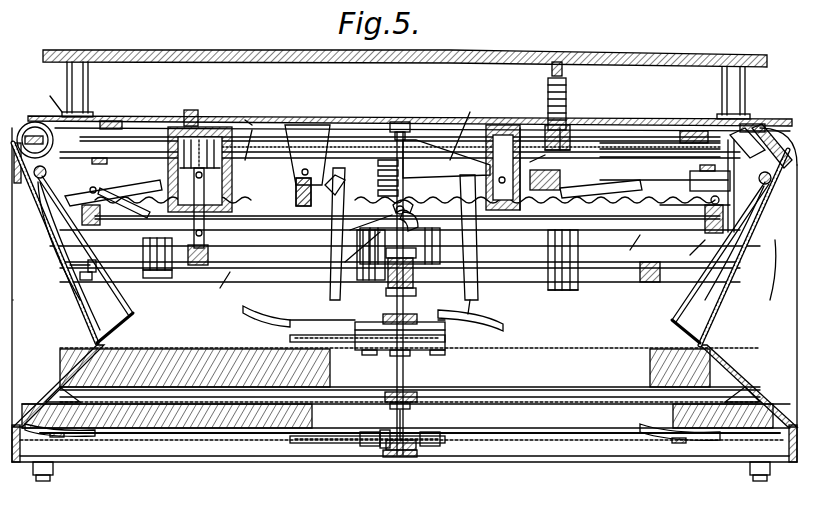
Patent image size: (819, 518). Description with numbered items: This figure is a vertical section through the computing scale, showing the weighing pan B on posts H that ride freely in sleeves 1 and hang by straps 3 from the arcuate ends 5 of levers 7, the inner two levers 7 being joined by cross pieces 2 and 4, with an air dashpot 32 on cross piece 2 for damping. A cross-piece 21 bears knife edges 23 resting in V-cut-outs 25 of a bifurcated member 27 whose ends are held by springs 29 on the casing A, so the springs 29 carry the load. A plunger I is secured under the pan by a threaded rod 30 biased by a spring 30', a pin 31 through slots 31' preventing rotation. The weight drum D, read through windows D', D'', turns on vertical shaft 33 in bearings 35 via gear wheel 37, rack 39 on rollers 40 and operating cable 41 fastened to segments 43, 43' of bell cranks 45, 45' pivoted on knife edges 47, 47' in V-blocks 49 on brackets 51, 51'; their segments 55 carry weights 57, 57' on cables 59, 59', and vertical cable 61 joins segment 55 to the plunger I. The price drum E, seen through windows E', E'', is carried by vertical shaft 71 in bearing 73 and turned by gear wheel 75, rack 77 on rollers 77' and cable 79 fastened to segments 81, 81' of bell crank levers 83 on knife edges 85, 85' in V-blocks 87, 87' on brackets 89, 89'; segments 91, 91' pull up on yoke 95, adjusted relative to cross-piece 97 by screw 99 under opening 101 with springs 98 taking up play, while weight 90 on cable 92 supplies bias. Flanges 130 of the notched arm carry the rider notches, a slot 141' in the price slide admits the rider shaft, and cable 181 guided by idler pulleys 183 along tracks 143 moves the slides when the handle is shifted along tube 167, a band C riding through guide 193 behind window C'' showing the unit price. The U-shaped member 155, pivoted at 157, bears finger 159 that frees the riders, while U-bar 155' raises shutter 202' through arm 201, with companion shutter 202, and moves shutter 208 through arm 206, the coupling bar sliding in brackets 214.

The weighing pan B is at (676, 53).
The posts H is at (88, 79).
The sleeves 1 is at (92, 116).
The price drum E is at (406, 378).
The window E'' is at (58, 376).
The window E' is at (748, 383).
The left slide D'' is at (54, 383).
The right slide D' is at (755, 384).
The weight drum D is at (410, 464).
The vertical shaft 71 is at (24, 123).
The idler pulleys 183 is at (36, 124).
The tube 167 is at (56, 112).
The pivot 157 is at (58, 250).
The U-shaped member 155 is at (56, 256).
The U-bar 155' is at (747, 243).
The link rod 141' is at (106, 241).
The link 202 is at (131, 328).
The shutter 202' is at (703, 261).
The bracket 214 is at (20, 260).
The straps 3 is at (385, 253).
The arcuate ends 5 is at (88, 265).
The block 201 is at (120, 290).
The guide 193 is at (782, 265).
The depending flanges 130 is at (240, 188).
The air dashpot 32 is at (215, 200).
The cross piece 2 is at (209, 257).
The tracks 143 is at (290, 124).
The continuous cable 181 is at (262, 120).
The casing A is at (256, 116).
The bell crank 45' is at (101, 294).
The knife edge 47' is at (117, 173).
The segment 55 is at (165, 192).
The bracket 51' is at (120, 197).
The cable 59' is at (145, 246).
The cable 59 is at (543, 258).
The weight 57 is at (563, 303).
The weight 57' is at (173, 288).
The levers 7 is at (432, 269).
The screw 99 is at (396, 122).
The opening 101 is at (404, 122).
The bracket 89' is at (364, 144).
The segment 91 is at (446, 137).
The springs 29 is at (465, 128).
The bracket 89 is at (500, 151).
The slots 31' is at (526, 151).
The knife edge 85' is at (314, 229).
The segment 91' is at (348, 176).
The V-block 87' is at (306, 212).
The V-block 87 is at (482, 237).
The knife edge 85 is at (533, 175).
The vertical cable 61 is at (544, 155).
The yoke 95 is at (396, 206).
The springs 98 is at (418, 212).
The cable 92 is at (380, 225).
The cross-piece 97 is at (350, 252).
The V-cut-outs 25 is at (426, 243).
The weight 90 is at (378, 280).
The cross-piece 21 is at (400, 289).
The knife edges 23 is at (415, 262).
The bifurcated member 27 is at (420, 290).
The bearing 73 is at (412, 316).
The cable 79 is at (320, 332).
The rack 77 is at (367, 323).
The rollers 77' is at (408, 362).
The gear wheel 75 is at (395, 356).
The bearings 35 is at (410, 395).
The vertical shaft 33 is at (408, 417).
The rack 39 is at (318, 443).
The rollers 40 is at (362, 446).
The gear wheel 37 is at (383, 450).
The operating cable 41 is at (268, 445).
The segment 43 is at (670, 459).
The segment 43' is at (60, 459).
The segment 81' is at (288, 321).
The segment 81 is at (486, 322).
The bell crank lever 83 is at (478, 305).
The cross piece 4 is at (648, 282).
The plunger I is at (568, 95).
The threaded rod 30 is at (583, 120).
The spring 30' is at (612, 121).
The pin 31 is at (574, 134).
The bracket 51 is at (660, 126).
The shutter 208 is at (756, 125).
The lever C'' is at (767, 127).
The band C is at (736, 186).
The arm 206 is at (700, 168).
The bell crank 45 is at (676, 246).
The finger 159 is at (691, 197).
The knife edge 47 is at (700, 197).
The V-block 49 is at (708, 220).